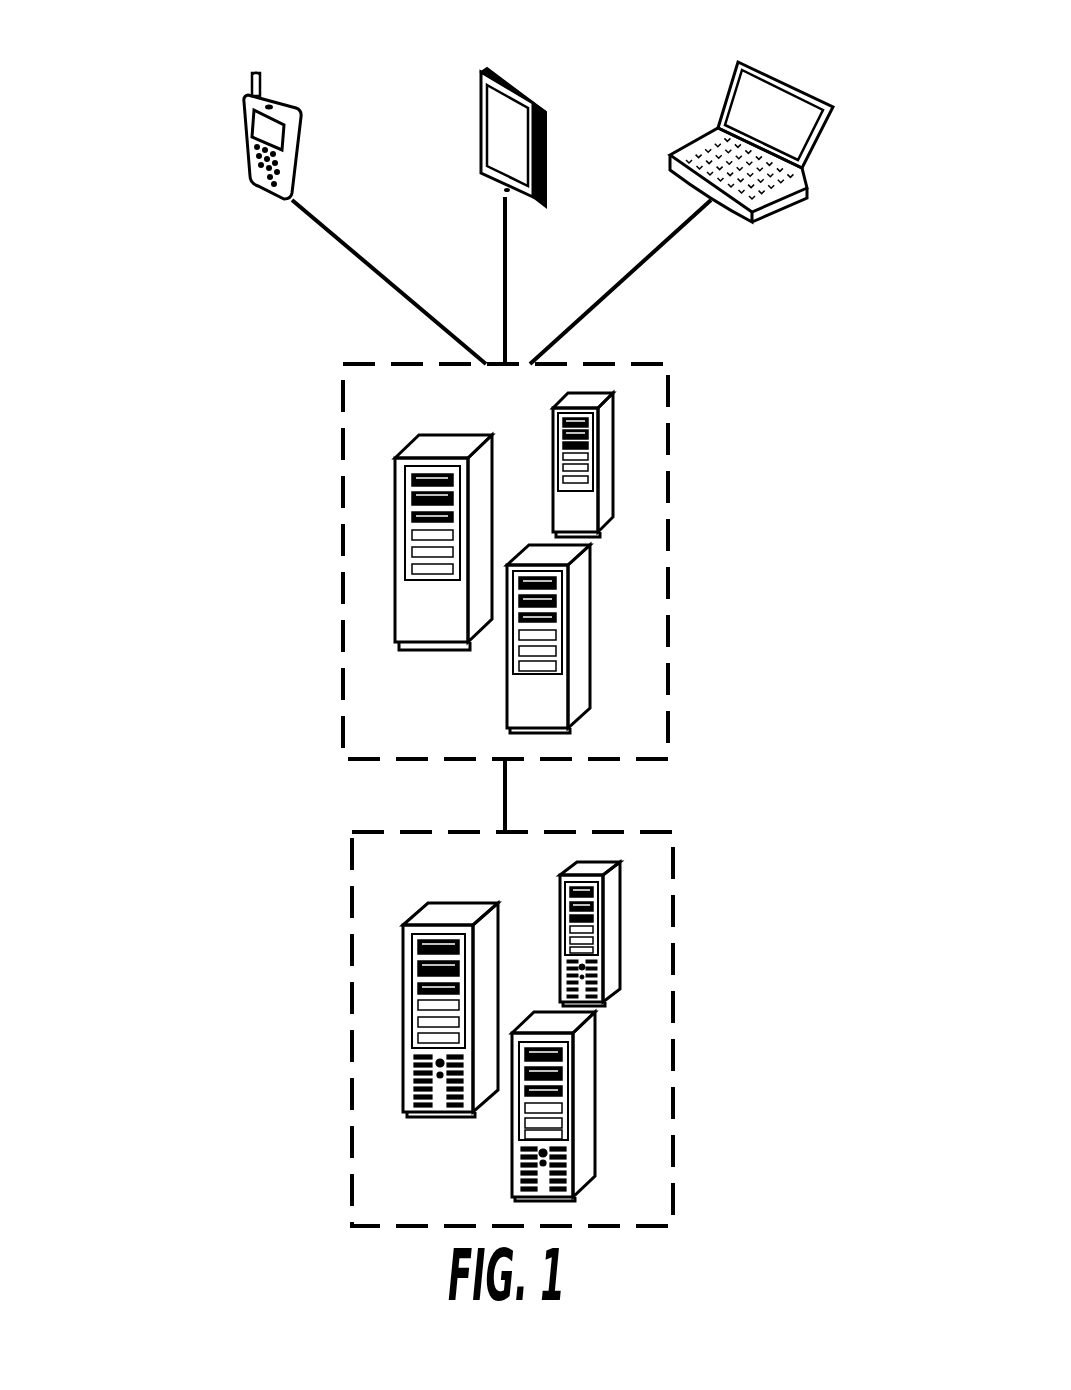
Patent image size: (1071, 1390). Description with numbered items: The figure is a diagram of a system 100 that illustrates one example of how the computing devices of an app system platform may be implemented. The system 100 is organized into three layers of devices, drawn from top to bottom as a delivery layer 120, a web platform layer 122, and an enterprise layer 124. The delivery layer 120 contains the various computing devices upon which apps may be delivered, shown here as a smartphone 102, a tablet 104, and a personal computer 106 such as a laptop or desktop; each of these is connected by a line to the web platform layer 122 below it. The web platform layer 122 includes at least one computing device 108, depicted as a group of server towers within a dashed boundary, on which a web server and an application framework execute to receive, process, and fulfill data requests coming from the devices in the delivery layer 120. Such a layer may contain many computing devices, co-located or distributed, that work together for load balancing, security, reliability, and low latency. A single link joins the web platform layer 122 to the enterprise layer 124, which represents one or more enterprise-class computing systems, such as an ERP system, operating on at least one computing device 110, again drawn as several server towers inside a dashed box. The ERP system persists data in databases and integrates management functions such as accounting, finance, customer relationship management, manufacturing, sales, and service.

The system 100 is at (598, 58).
The smartphone 102 is at (251, 186).
The tablet 104 is at (481, 130).
The personal computer 106 is at (728, 98).
The computing device 108 is at (668, 482).
The computing device 110 is at (673, 905).
The delivery layer 120 is at (198, 140).
The web platform layer 122 is at (285, 532).
The enterprise layer 124 is at (285, 977).